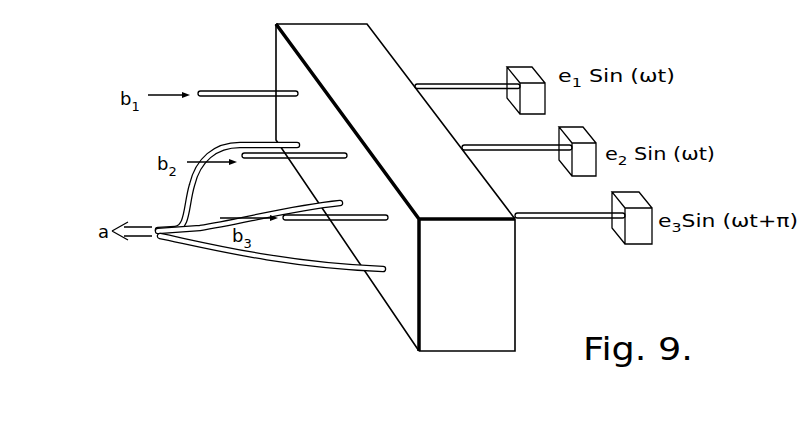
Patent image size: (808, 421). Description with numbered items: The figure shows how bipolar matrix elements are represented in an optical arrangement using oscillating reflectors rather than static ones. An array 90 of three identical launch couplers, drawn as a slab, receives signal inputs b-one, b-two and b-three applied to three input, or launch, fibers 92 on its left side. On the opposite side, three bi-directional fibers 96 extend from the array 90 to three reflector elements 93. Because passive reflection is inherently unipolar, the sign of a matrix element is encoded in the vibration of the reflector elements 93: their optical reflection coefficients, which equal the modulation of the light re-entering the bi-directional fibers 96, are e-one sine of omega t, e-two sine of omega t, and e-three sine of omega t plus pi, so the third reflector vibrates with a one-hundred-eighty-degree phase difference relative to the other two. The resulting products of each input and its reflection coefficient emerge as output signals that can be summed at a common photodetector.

The array of launch couplers 90 is at (409, 343).
The input fibers 92 is at (238, 91).
The reflector elements 93 is at (519, 66).
The bi-directional fibers 96 is at (478, 146).